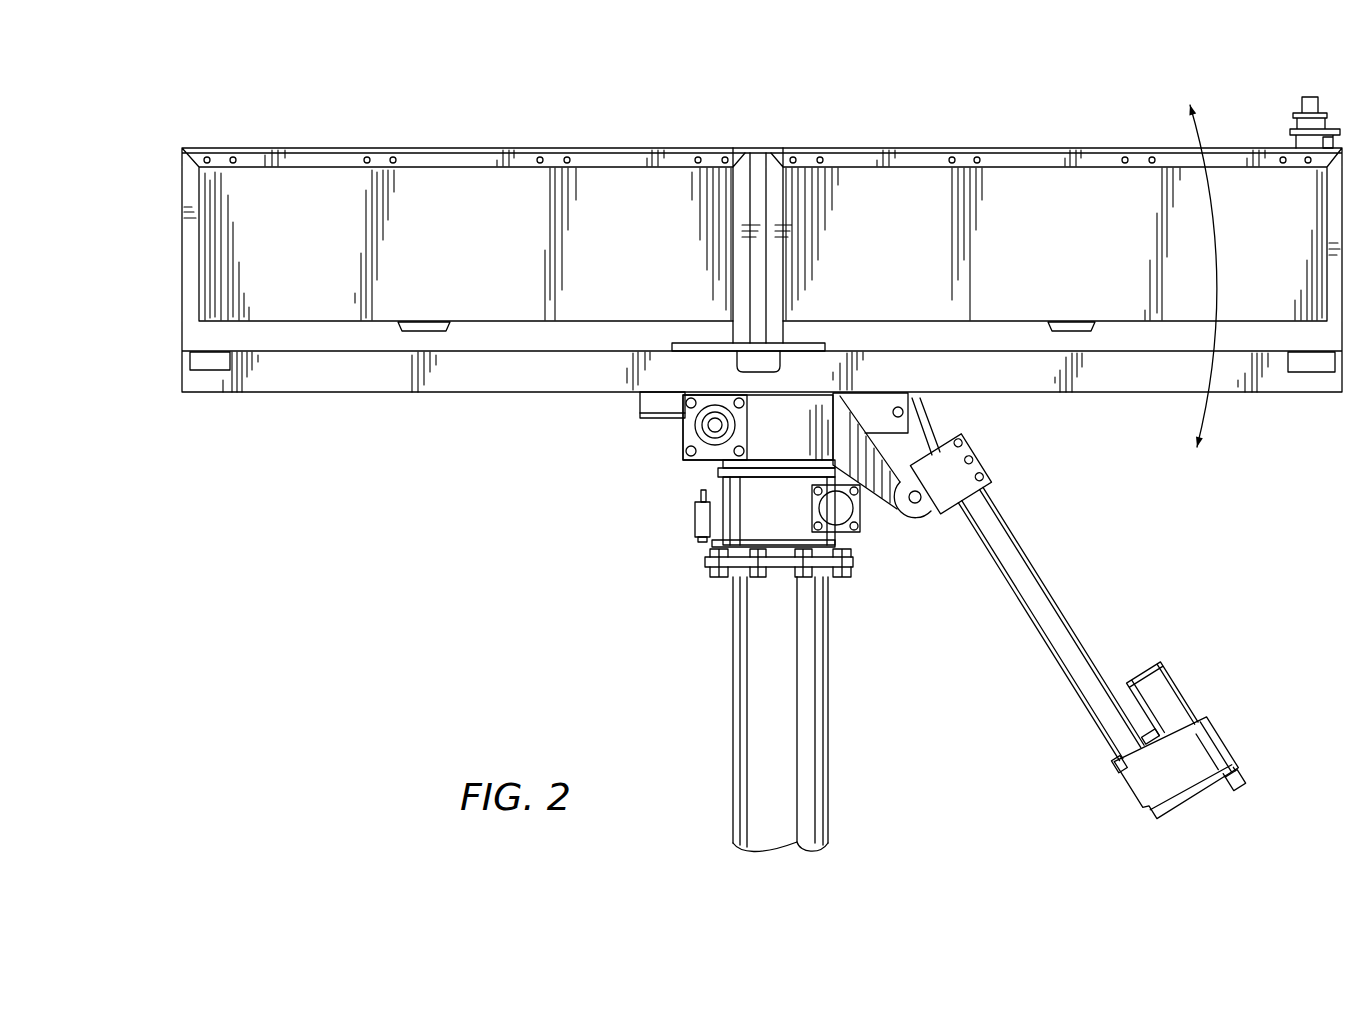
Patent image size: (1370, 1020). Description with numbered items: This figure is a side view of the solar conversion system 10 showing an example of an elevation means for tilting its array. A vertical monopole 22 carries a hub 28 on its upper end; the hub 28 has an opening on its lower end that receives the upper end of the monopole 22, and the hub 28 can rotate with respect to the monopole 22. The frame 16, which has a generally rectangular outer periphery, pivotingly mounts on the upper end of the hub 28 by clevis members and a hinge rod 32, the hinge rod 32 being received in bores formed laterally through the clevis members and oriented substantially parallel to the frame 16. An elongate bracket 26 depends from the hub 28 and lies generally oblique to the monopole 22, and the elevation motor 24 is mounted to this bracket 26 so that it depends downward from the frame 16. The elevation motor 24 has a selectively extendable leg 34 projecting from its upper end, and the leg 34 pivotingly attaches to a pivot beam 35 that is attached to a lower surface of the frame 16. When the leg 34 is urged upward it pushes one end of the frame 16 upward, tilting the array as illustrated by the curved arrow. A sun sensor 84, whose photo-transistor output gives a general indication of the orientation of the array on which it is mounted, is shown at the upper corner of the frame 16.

The solar conversion system 10 is at (516, 498).
The frame 16 is at (1128, 377).
The monopole 22 is at (805, 785).
The elevation motor 24 is at (1230, 712).
The bracket 26 is at (890, 478).
The hub 28 is at (758, 465).
The hinge rod 32 is at (685, 443).
The selectively extendable leg 34 is at (930, 432).
The pivot beam 35 is at (893, 398).
The sun sensor 84 is at (1288, 106).